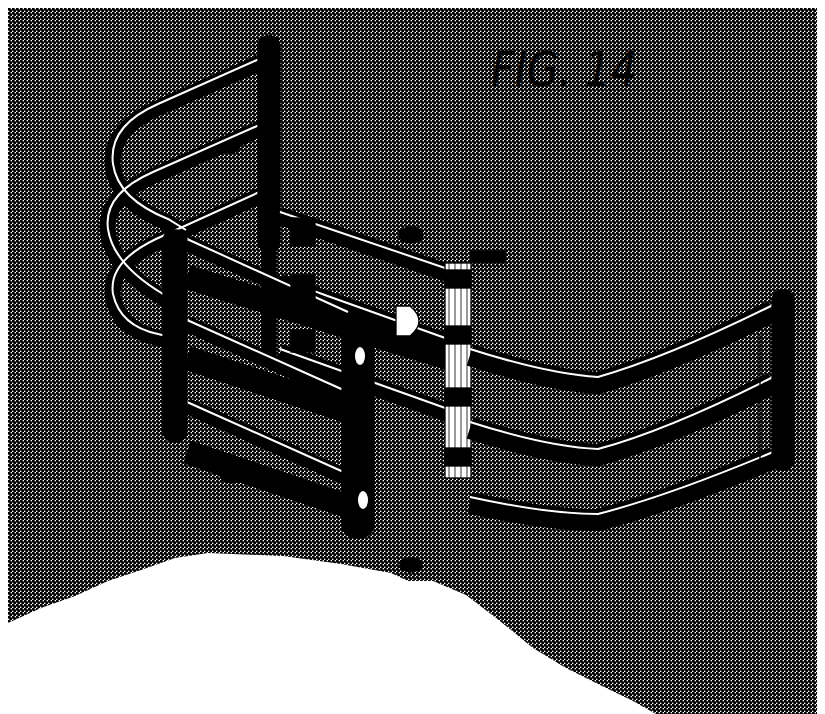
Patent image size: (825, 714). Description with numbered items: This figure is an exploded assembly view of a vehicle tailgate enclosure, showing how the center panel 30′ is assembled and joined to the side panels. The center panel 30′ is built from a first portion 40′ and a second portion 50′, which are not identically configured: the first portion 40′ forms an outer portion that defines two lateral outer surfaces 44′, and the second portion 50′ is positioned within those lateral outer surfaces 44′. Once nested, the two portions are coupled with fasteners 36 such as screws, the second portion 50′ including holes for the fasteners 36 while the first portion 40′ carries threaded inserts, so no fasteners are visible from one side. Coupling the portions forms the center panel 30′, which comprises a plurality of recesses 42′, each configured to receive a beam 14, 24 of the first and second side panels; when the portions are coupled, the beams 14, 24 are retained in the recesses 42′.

The beam 14 is at (620, 497).
The beam 24 is at (198, 208).
The center panel 30′ is at (275, 517).
The fasteners 36 is at (503, 298).
The first portion 40′ is at (255, 452).
The recesses 42′ is at (288, 212).
The lateral outer surfaces 44′ is at (156, 383).
The second portion 50′ is at (348, 242).